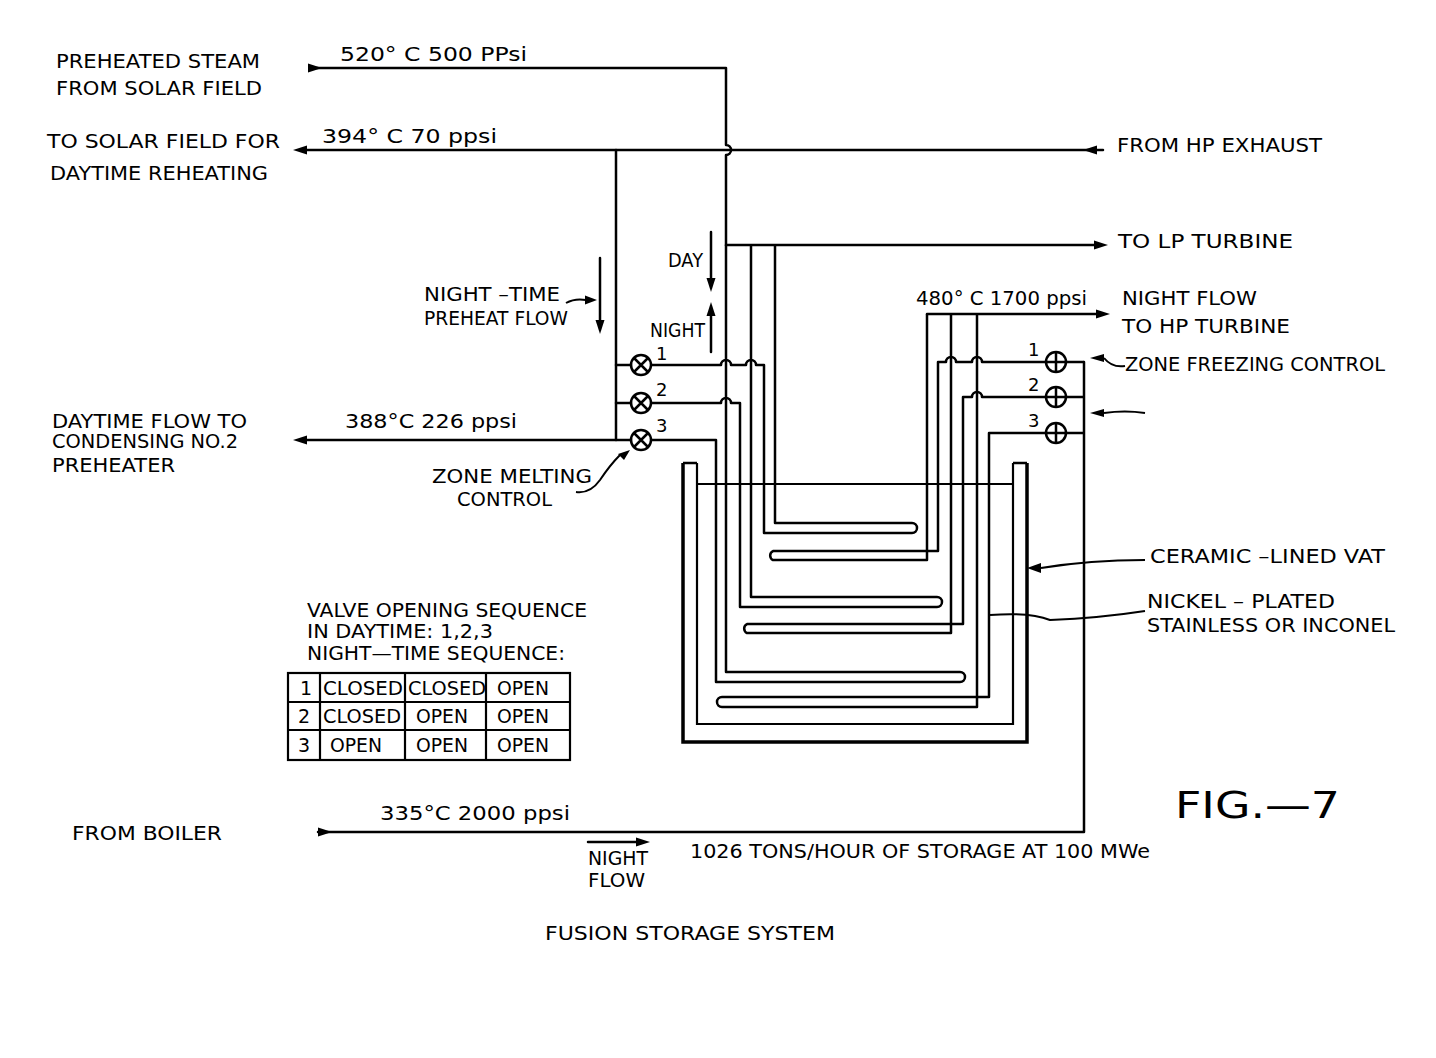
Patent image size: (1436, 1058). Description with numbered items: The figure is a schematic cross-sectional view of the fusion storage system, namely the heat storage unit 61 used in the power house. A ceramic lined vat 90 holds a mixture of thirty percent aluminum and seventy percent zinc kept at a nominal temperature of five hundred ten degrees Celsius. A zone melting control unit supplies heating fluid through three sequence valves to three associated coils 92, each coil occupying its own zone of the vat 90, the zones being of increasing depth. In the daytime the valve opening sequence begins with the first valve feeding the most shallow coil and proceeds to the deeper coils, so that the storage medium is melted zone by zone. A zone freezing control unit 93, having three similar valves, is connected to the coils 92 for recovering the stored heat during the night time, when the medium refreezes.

The heat storage unit 61 is at (647, 684).
The ceramic lined vat 90 is at (1030, 724).
The coils 92 is at (871, 661).
The zone freezing control unit 93 is at (946, 510).